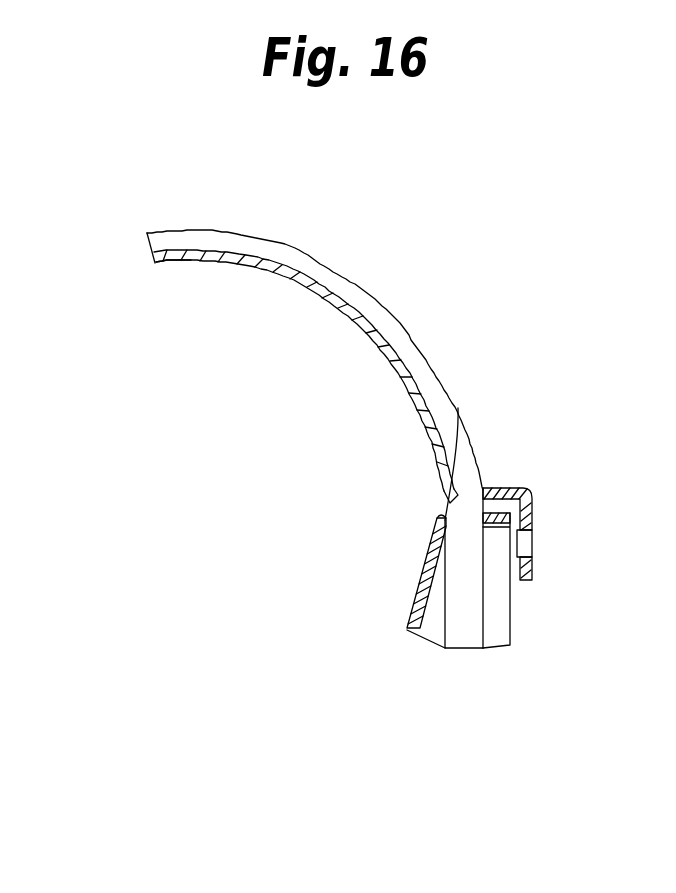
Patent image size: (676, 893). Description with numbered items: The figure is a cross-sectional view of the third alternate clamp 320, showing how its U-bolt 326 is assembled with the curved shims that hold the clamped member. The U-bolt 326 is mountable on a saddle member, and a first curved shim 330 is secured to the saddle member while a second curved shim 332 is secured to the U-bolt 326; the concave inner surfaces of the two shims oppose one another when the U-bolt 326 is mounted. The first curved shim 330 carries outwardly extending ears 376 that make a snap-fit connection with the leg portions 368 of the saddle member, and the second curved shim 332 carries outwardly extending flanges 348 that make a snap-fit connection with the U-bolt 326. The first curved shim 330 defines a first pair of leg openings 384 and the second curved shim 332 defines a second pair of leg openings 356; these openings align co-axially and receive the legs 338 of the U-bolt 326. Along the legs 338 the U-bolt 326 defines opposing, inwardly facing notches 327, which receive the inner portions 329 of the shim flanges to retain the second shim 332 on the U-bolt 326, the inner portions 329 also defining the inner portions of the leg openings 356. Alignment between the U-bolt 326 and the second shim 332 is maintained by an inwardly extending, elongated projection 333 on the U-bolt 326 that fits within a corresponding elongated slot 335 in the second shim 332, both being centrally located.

The third alternate clamp 320 is at (368, 187).
The U-bolt 326 is at (355, 283).
The notches 327 is at (458, 412).
The inner portions 329 is at (444, 490).
The first curved shim 330 is at (413, 603).
The second curved shim 332 is at (337, 316).
The elongated projection 333 is at (193, 250).
The elongated slot 335 is at (188, 262).
The legs 338 is at (465, 628).
The outwardly extending flanges 348 is at (524, 488).
The leg openings 356 is at (492, 488).
The leg portions 368 is at (513, 595).
The outwardly extending ears 376 is at (512, 516).
The leg openings 384 is at (437, 519).